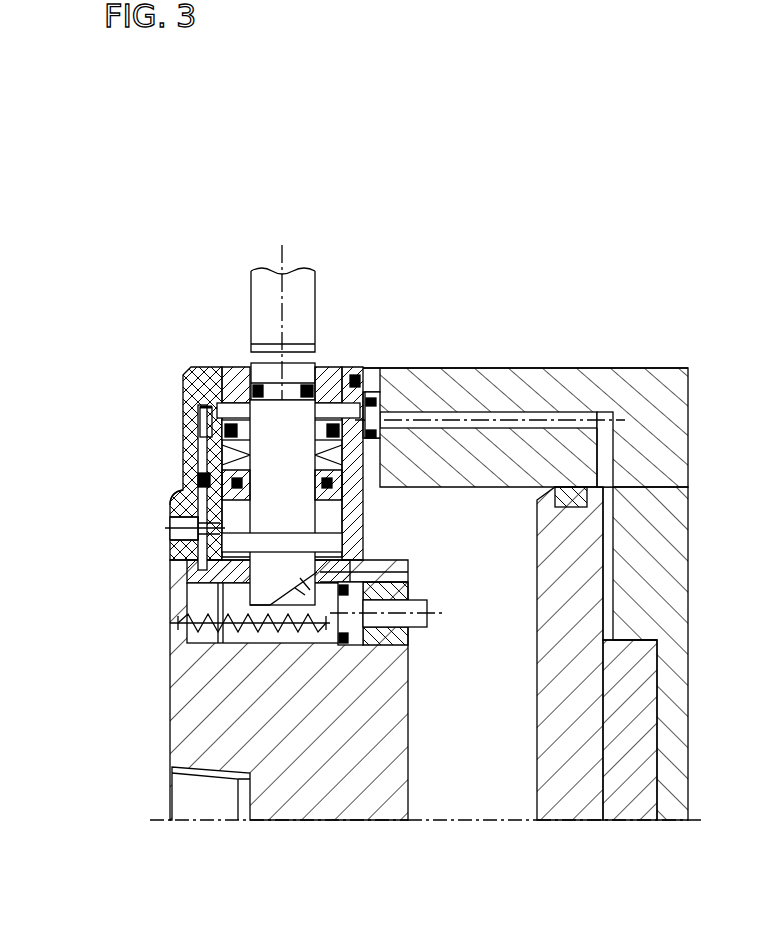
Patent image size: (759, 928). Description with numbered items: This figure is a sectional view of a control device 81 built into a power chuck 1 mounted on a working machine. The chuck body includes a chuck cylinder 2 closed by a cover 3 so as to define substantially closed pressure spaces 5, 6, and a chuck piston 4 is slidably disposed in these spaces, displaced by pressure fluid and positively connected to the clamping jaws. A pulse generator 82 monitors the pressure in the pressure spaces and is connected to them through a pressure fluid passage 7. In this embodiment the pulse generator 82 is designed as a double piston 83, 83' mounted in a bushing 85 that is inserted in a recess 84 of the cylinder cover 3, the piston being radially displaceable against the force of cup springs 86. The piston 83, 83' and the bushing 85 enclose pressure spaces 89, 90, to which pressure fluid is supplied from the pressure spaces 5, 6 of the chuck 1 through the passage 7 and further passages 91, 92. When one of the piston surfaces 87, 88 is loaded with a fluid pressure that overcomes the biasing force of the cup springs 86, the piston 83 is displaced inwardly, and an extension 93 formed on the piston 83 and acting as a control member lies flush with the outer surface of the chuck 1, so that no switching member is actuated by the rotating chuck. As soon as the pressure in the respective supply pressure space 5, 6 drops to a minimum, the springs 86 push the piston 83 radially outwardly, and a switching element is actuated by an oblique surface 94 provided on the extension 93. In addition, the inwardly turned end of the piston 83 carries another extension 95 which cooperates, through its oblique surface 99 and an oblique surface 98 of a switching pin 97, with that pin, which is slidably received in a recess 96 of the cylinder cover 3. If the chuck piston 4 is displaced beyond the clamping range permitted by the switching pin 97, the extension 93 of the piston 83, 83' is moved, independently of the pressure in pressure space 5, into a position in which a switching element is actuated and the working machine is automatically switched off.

The power chuck 1 is at (532, 366).
The chuck cylinder 2 is at (567, 385).
The cover 3 is at (345, 790).
The chuck piston 4 is at (567, 787).
The pressure space 5 is at (613, 590).
The pressure space 6 is at (475, 787).
The pressure fluid passage 7 is at (598, 420).
The control device 81 is at (118, 432).
The pulse generator 82 is at (222, 322).
The piston 83 is at (227, 484).
The piston 83' is at (413, 612).
The recess 84 is at (366, 508).
The bushing 85 is at (355, 375).
The cup springs 86 is at (205, 420).
The piston surface 87 is at (232, 377).
The piston surface 88 is at (204, 478).
The pressure space 89 is at (372, 400).
The pressure space 90 is at (335, 530).
The passage 91 is at (385, 420).
The passage 92 is at (335, 480).
The extension 93 is at (290, 385).
The oblique surface 94 is at (300, 372).
The extension 95 is at (340, 627).
The recess 96 is at (300, 583).
The switching pin 97 is at (345, 600).
The oblique surface 98 is at (262, 597).
The oblique surface 99 is at (178, 528).